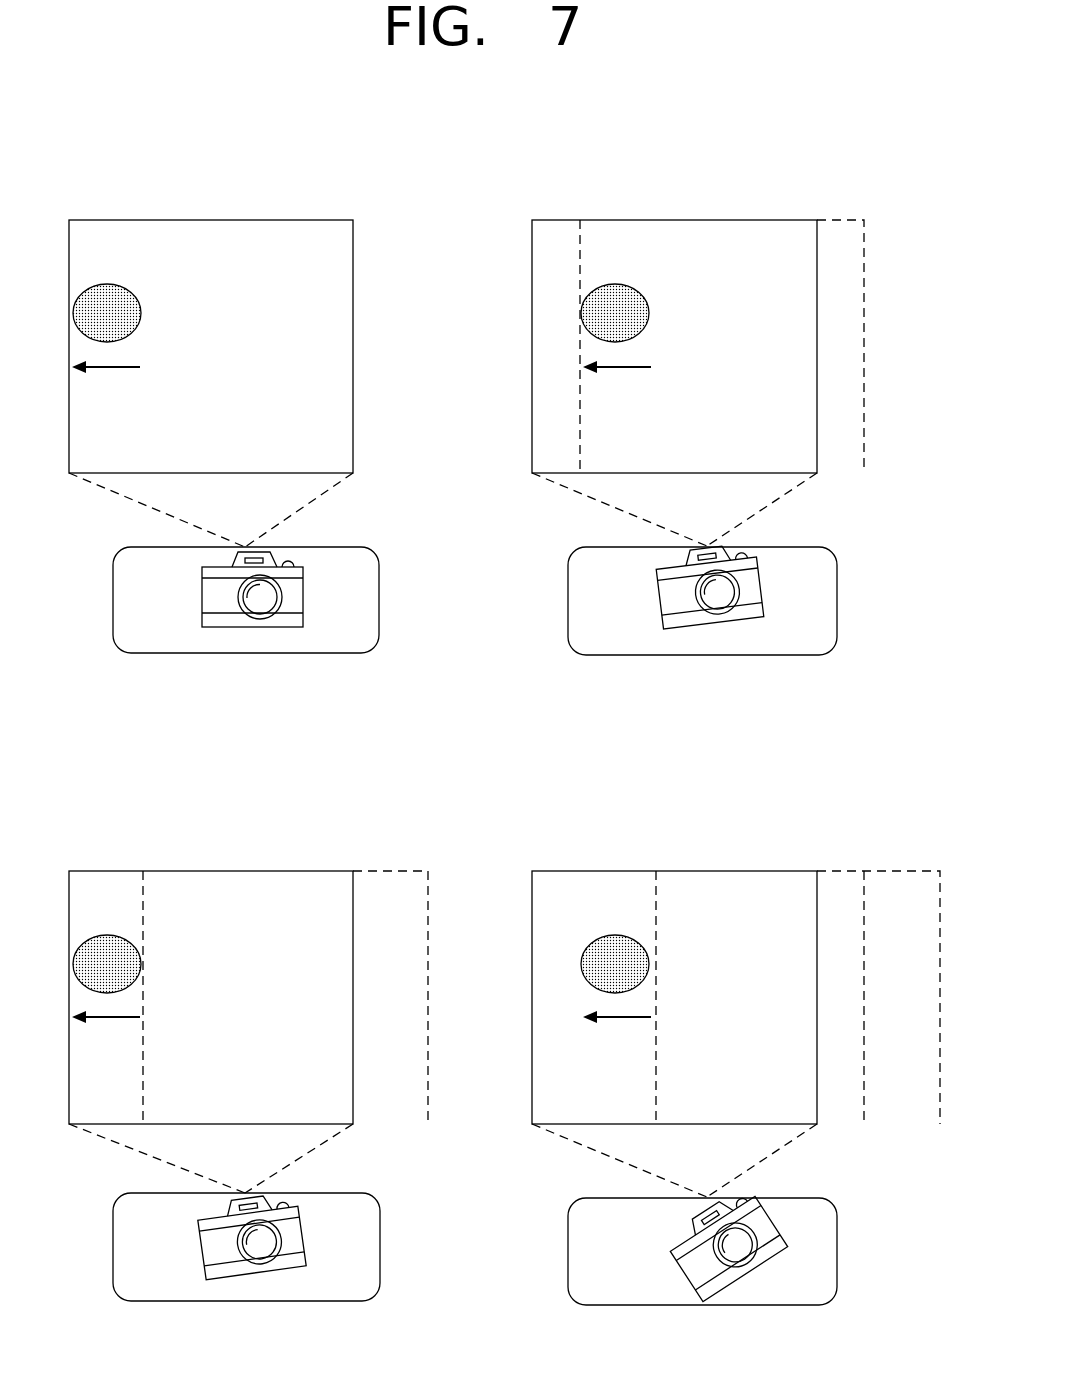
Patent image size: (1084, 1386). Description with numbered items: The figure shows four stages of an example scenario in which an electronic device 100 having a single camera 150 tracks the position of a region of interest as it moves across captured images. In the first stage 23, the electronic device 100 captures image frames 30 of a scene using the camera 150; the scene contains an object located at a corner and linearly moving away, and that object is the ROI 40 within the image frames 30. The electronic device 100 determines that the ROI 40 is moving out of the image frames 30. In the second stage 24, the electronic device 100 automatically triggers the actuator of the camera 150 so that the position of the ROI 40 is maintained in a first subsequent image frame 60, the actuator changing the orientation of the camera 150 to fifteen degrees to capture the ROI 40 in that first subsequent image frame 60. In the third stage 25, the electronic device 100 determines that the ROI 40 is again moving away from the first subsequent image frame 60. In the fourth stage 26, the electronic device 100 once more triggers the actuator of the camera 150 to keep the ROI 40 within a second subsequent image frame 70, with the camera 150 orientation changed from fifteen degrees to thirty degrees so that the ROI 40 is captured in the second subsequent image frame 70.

The first scenario stage 23 is at (330, 188).
The second scenario stage 24 is at (786, 188).
The third scenario stage 25 is at (331, 838).
The fourth scenario stage 26 is at (786, 838).
The image frames 30 is at (213, 228).
The ROI 40 is at (107, 284).
The first subsequent image frame 60 is at (553, 228).
The second subsequent image frame 70 is at (554, 878).
The electronic device 100 is at (164, 614).
The camera 150 is at (304, 600).